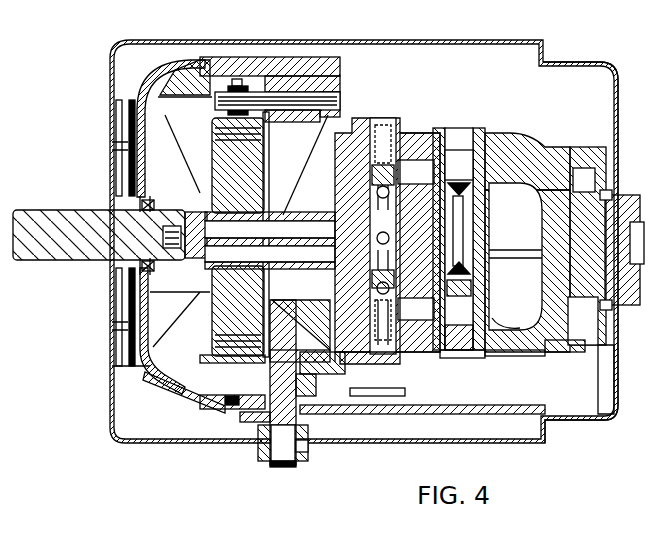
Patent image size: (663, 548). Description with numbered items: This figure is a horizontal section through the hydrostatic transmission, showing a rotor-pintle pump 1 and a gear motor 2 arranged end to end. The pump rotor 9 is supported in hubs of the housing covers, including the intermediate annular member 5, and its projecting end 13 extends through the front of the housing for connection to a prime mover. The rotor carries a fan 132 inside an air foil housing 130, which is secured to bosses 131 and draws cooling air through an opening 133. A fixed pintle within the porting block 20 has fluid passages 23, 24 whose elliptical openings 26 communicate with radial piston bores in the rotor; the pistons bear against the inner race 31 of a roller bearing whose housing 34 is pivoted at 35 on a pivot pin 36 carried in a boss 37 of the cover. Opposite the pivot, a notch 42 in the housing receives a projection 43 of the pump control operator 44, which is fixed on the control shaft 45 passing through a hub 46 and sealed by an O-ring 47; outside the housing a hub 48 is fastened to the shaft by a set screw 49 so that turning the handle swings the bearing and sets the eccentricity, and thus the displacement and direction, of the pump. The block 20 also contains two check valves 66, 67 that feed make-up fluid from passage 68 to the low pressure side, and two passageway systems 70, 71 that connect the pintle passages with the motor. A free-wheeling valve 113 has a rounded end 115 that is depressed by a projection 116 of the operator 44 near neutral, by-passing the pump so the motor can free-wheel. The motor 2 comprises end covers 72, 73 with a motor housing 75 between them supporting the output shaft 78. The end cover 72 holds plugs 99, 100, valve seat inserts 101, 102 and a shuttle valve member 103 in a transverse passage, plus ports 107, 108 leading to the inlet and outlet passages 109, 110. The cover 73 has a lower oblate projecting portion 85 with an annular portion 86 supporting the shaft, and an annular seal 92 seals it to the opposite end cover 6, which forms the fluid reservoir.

The pump 1 is at (197, 150).
The gear motor 2 is at (530, 140).
The intermediate annular member 5 is at (292, 60).
The opposite end cover 6 is at (584, 422).
The pump rotor 9 is at (108, 264).
The projecting end of rotor 13 is at (34, 260).
The porting block 20 is at (420, 352).
The fluid passage 23 is at (270, 253).
The fluid passage 24 is at (270, 226).
The elliptical opening 26 is at (246, 202).
The inner race 31 is at (210, 332).
The housing 34 is at (205, 355).
The pivot 35 is at (235, 84).
The pivot pin 36 is at (340, 98).
The boss 37 is at (298, 122).
The notch 42 is at (223, 398).
The projection 43 is at (255, 370).
The pump control operator 44 is at (270, 340).
The control shaft 45 is at (283, 470).
The hub 46 is at (304, 378).
The O-ring 47 is at (258, 420).
The hub 48 is at (260, 462).
The set screw 49 is at (308, 448).
The check valve 66 is at (396, 198).
The check valve 67 is at (406, 262).
The passage 68 is at (370, 243).
The passageway 70 is at (432, 172).
The passageway 71 is at (432, 309).
The end cover 72 is at (460, 358).
The end cover 73 is at (556, 344).
The motor housing 75 is at (505, 355).
The output shaft 78 is at (630, 248).
The lower oblate projecting portion 85 is at (612, 305).
The annular projecting portion 86 is at (612, 195).
The annular seal 92 is at (600, 350).
The plug 99 is at (405, 364).
The plug 100 is at (462, 128).
The valve seat insert 101 is at (457, 172).
The valve seat insert 102 is at (482, 318).
The shuttle valve member 103 is at (470, 240).
The port 107 is at (484, 176).
The port 108 is at (484, 316).
The inlet and outlet passage 109 is at (506, 210).
The inlet and outlet passage 110 is at (505, 262).
The free-wheeling valve 113 is at (346, 392).
The rounded end 115 is at (336, 360).
The projection 116 is at (306, 335).
The air foil housing 130 is at (112, 424).
The boss 131 is at (116, 340).
The fan 132 is at (116, 148).
The opening 133 is at (128, 290).